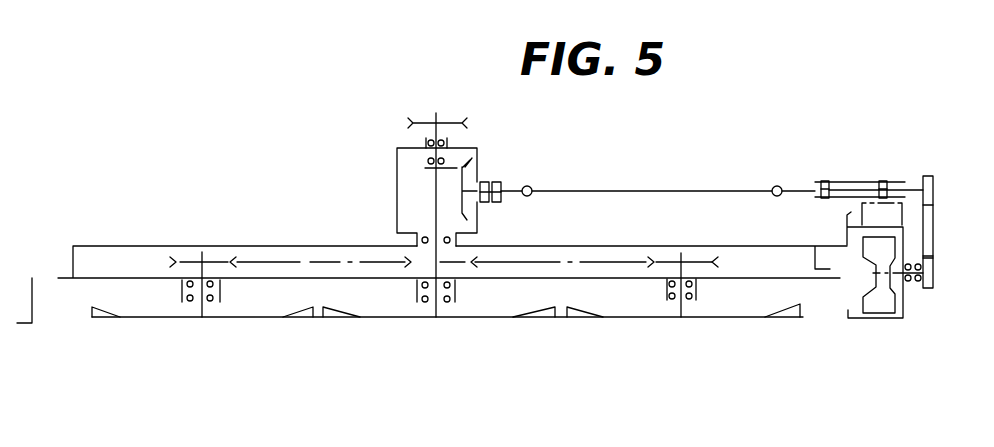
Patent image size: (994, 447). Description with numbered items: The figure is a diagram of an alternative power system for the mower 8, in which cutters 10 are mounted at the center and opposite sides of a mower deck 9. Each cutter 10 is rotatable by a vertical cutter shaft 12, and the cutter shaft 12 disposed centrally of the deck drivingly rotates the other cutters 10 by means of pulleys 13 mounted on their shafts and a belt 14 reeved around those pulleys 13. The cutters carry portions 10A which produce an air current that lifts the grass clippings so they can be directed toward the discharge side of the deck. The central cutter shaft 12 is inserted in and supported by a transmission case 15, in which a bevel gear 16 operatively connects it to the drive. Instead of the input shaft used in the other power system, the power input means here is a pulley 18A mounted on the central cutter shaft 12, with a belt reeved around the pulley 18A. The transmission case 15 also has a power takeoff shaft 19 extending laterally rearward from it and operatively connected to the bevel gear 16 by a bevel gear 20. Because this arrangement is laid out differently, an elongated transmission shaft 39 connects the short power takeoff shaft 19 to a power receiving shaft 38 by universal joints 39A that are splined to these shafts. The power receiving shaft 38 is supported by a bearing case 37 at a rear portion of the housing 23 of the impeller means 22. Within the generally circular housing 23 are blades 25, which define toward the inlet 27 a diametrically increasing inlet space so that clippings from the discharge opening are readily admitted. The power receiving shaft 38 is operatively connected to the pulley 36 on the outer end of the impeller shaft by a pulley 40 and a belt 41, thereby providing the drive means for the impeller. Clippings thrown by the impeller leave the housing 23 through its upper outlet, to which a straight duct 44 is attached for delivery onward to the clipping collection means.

The mower 8 is at (591, 171).
The mower deck 9 is at (112, 246).
The cutters 10 is at (237, 318).
The portions 10A is at (312, 315).
The cutter shaft 12 is at (201, 306).
The pulleys 13 is at (181, 260).
The belt 14 is at (304, 264).
The transmission case 15 is at (396, 159).
The bevel gear 16 is at (428, 164).
The pulley 18A is at (423, 122).
The power takeoff shaft 19 is at (516, 188).
The bevel gear 20 is at (466, 180).
The impeller means 22 is at (926, 300).
The housing 23 is at (902, 322).
The blades 25 is at (883, 305).
The inlet 27 is at (853, 297).
The pulley 36 is at (935, 274).
The bearing case 37 is at (873, 180).
The power receiving shaft 38 is at (803, 184).
The transmission shaft 39 is at (667, 194).
The universal joints 39A is at (530, 195).
The pulley 40 is at (935, 186).
The belt 41 is at (935, 243).
The straight duct 44 is at (902, 214).